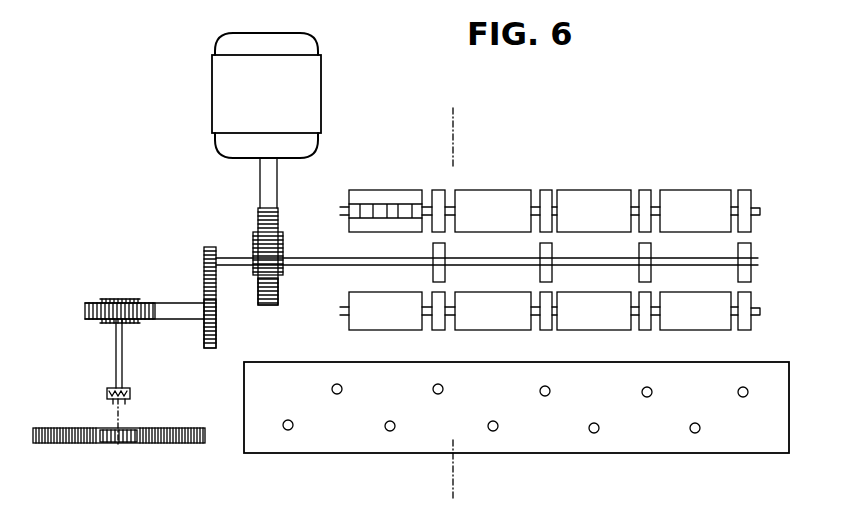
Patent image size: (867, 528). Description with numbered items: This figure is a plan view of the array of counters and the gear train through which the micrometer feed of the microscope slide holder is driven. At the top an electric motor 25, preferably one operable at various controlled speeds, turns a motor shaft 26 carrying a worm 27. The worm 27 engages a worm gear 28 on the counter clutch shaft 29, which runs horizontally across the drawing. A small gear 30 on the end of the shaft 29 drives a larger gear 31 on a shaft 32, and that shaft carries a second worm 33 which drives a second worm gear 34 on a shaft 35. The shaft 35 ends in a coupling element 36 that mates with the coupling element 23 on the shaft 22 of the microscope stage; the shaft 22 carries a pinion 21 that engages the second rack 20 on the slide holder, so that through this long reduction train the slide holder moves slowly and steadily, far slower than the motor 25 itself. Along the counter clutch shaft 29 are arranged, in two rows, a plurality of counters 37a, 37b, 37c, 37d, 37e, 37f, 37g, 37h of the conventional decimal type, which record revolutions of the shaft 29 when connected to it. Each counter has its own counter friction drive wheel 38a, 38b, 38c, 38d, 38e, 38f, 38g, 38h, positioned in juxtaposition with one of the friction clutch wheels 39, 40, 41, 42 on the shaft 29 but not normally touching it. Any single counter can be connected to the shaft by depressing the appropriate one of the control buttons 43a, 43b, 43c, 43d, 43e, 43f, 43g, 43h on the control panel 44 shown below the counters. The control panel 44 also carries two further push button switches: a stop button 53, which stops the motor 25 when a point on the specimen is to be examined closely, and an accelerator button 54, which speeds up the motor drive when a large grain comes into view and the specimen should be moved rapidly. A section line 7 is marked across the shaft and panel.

The section line 7- 7 is at (455, 125).
The second rack 20 is at (160, 444).
The pinion 21 is at (117, 443).
The shaft 22 is at (116, 406).
The coupling element 23 is at (127, 398).
The electric motor 25 is at (305, 87).
The motor shaft 26 is at (277, 184).
The worm 27 is at (280, 246).
The worm gear 28 is at (278, 290).
The counter clutch shaft 29 is at (345, 265).
The small gear 30 is at (212, 247).
The larger gear 31 is at (216, 333).
The shaft 32 is at (178, 302).
The second worm 33 is at (119, 299).
The second worm gear 34 is at (93, 317).
The shaft 35 is at (122, 345).
The coupling element 36 is at (108, 389).
The counter 37a is at (379, 190).
The counter 37b is at (491, 190).
The counter 37c is at (591, 190).
The counter 37d is at (691, 190).
The counter 37e is at (392, 330).
The counter 37f is at (500, 330).
The counter 37g is at (598, 330).
The counter 37h is at (700, 330).
The counter friction drive wheel 38a is at (438, 190).
The counter friction drive wheel 38b is at (541, 211).
The counter friction drive wheel 38c is at (641, 211).
The counter friction drive wheel 38d is at (745, 211).
The counter friction drive wheel 38e is at (441, 331).
The counter friction drive wheel 38f is at (541, 311).
The counter friction drive wheel 38g is at (641, 311).
The counter friction drive wheel 38h is at (745, 311).
The friction clutch wheel 39 is at (445, 275).
The friction clutch wheel 40 is at (552, 275).
The friction clutch wheel 41 is at (651, 275).
The friction clutch wheel 42 is at (751, 275).
The control button 43a is at (395, 427).
The control button 43b is at (498, 427).
The control button 43c is at (599, 429).
The control button 43d is at (700, 429).
The control button 43e is at (433, 389).
The control button 43f is at (540, 391).
The control button 43g is at (642, 392).
The control button 43h is at (738, 392).
The control panel 44 is at (565, 446).
The stop button 53 is at (293, 427).
The accelerator button 54 is at (332, 389).